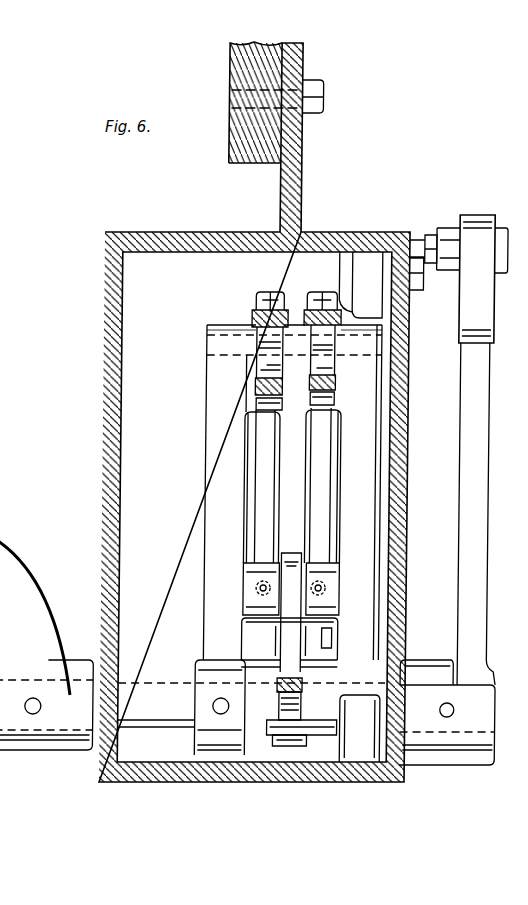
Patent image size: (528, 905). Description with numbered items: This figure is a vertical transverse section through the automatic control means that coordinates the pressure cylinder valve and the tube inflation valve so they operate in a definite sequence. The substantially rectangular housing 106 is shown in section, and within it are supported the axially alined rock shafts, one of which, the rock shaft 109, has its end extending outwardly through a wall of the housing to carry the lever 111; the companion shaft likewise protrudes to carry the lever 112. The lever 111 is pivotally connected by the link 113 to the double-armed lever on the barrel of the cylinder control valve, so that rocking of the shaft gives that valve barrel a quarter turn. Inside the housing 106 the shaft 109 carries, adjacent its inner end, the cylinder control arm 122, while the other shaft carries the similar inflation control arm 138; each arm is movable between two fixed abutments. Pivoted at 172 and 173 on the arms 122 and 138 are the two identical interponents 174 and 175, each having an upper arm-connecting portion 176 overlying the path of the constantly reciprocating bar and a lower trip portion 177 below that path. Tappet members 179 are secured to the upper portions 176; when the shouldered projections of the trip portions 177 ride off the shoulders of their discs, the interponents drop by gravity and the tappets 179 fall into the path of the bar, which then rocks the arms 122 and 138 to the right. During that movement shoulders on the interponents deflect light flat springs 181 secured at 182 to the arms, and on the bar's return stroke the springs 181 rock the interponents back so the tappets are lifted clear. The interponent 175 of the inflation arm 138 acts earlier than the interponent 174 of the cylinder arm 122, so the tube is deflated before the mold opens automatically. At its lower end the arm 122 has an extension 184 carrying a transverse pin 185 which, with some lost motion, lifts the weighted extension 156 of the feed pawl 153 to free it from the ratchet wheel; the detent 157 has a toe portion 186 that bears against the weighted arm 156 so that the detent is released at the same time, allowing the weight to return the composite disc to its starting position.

The housing 106 is at (130, 258).
The rock shaft 109 is at (438, 685).
The lever 111 is at (472, 523).
The lever 112 is at (0, 548).
The link 113 is at (448, 228).
The cylinder control arm 122 is at (370, 486).
The inflation control arm 138 is at (218, 524).
The feed pawl 153 is at (287, 684).
The weighted extension 156 is at (286, 746).
The detent 157 is at (295, 628).
The pivot 172 is at (392, 352).
The pivot 173 is at (218, 336).
The interponent 174 is at (322, 330).
The interponent 175 is at (268, 366).
The upper arm-connecting portion 176 is at (292, 309).
The lower trip portion 177 is at (318, 396).
The tappet member 179 is at (262, 318).
The flat spring 181 is at (272, 461).
The spring attachment 182 is at (255, 580).
The extension 184 is at (360, 750).
The transverse pin 185 is at (318, 745).
The toe portion 186 is at (280, 660).